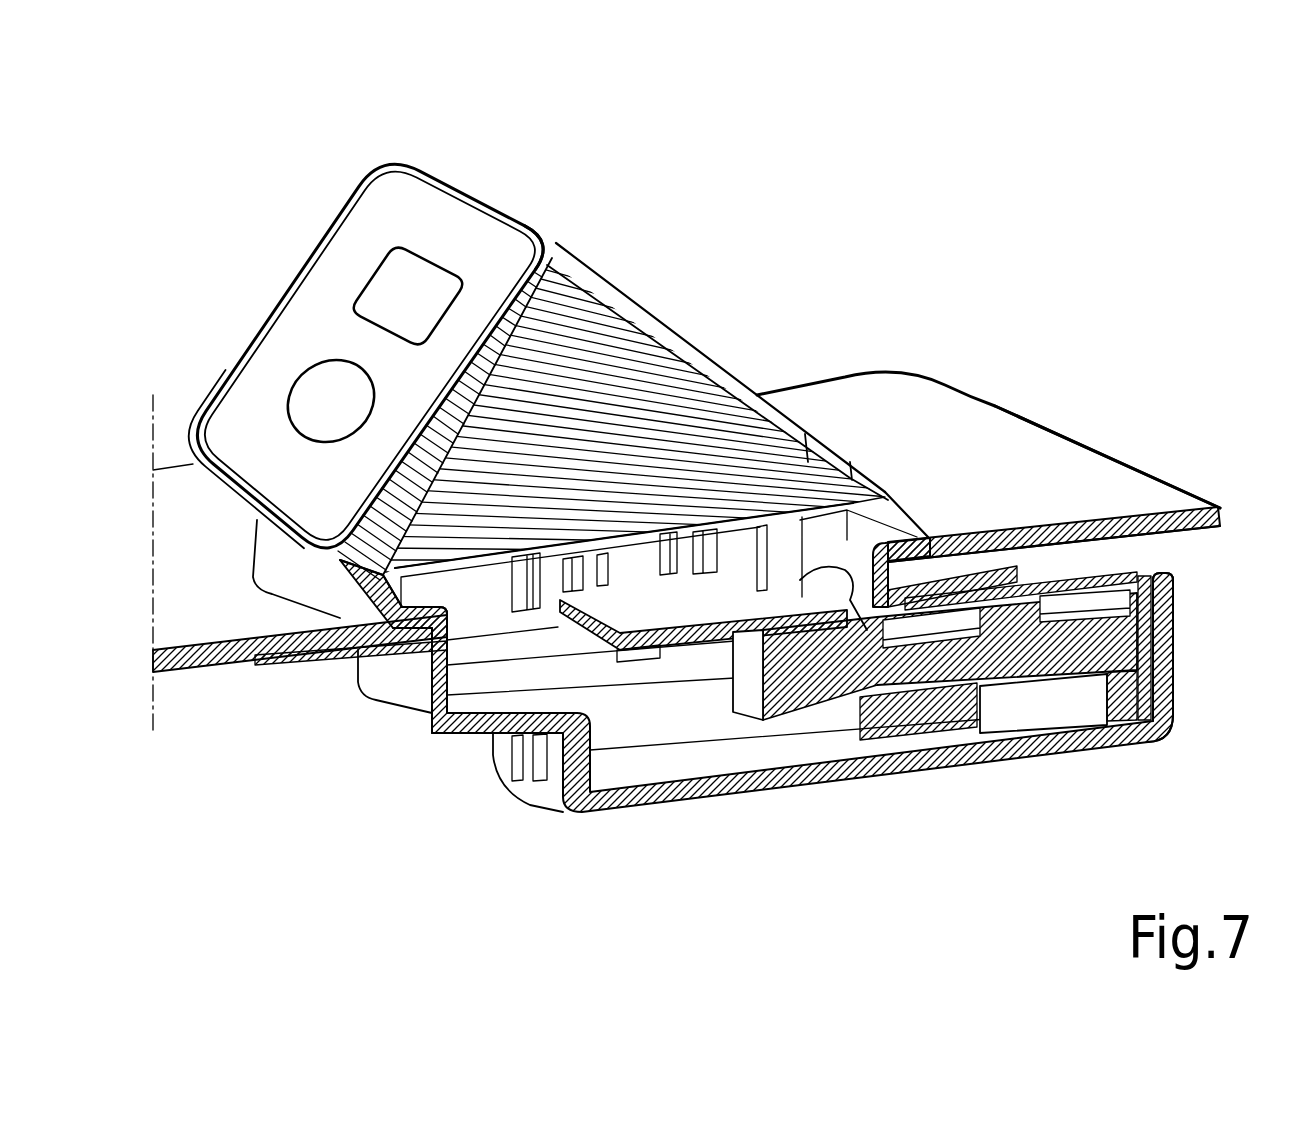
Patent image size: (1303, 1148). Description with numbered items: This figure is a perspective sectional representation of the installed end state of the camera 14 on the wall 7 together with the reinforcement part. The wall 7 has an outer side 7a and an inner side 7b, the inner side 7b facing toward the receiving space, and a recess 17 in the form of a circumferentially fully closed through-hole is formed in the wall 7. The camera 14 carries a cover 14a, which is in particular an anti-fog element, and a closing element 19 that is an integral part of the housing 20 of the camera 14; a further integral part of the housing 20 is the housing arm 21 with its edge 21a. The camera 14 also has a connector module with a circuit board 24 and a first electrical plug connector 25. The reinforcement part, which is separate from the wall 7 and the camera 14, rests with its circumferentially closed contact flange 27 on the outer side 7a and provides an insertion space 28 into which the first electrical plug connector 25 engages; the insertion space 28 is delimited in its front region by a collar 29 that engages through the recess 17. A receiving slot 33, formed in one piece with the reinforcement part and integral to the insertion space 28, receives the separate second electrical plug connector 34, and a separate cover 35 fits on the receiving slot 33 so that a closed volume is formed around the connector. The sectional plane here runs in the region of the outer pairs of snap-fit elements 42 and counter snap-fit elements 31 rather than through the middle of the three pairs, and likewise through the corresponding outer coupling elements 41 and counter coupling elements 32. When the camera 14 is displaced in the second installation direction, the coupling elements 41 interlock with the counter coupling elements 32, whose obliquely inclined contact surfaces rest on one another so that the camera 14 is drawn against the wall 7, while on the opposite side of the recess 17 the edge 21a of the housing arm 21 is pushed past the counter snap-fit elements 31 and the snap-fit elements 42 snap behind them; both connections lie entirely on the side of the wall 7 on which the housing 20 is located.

The camera 14 is at (397, 318).
The cover 14a is at (467, 240).
The closing element 19 is at (562, 262).
The housing 20 is at (655, 272).
The housing arm 21 is at (815, 391).
The edge 21a is at (935, 540).
The wall 7 is at (994, 504).
The outer side 7a is at (1190, 540).
The inner side 7b is at (1172, 505).
The counter snap-fit elements 31 is at (883, 533).
The snap-fit elements 42 is at (930, 540).
The collar 29 is at (825, 582).
The circuit board 24 is at (697, 633).
The first electrical plug connector 25 is at (807, 708).
The insertion space 28 is at (628, 733).
The receiving slot 33 is at (672, 760).
The second electrical plug connector 34 is at (1055, 675).
The cover 35 is at (1143, 742).
The contact flange 27 is at (320, 660).
The coupling elements 41 is at (392, 618).
The recess 17 is at (406, 640).
The counter coupling elements 32 is at (387, 625).